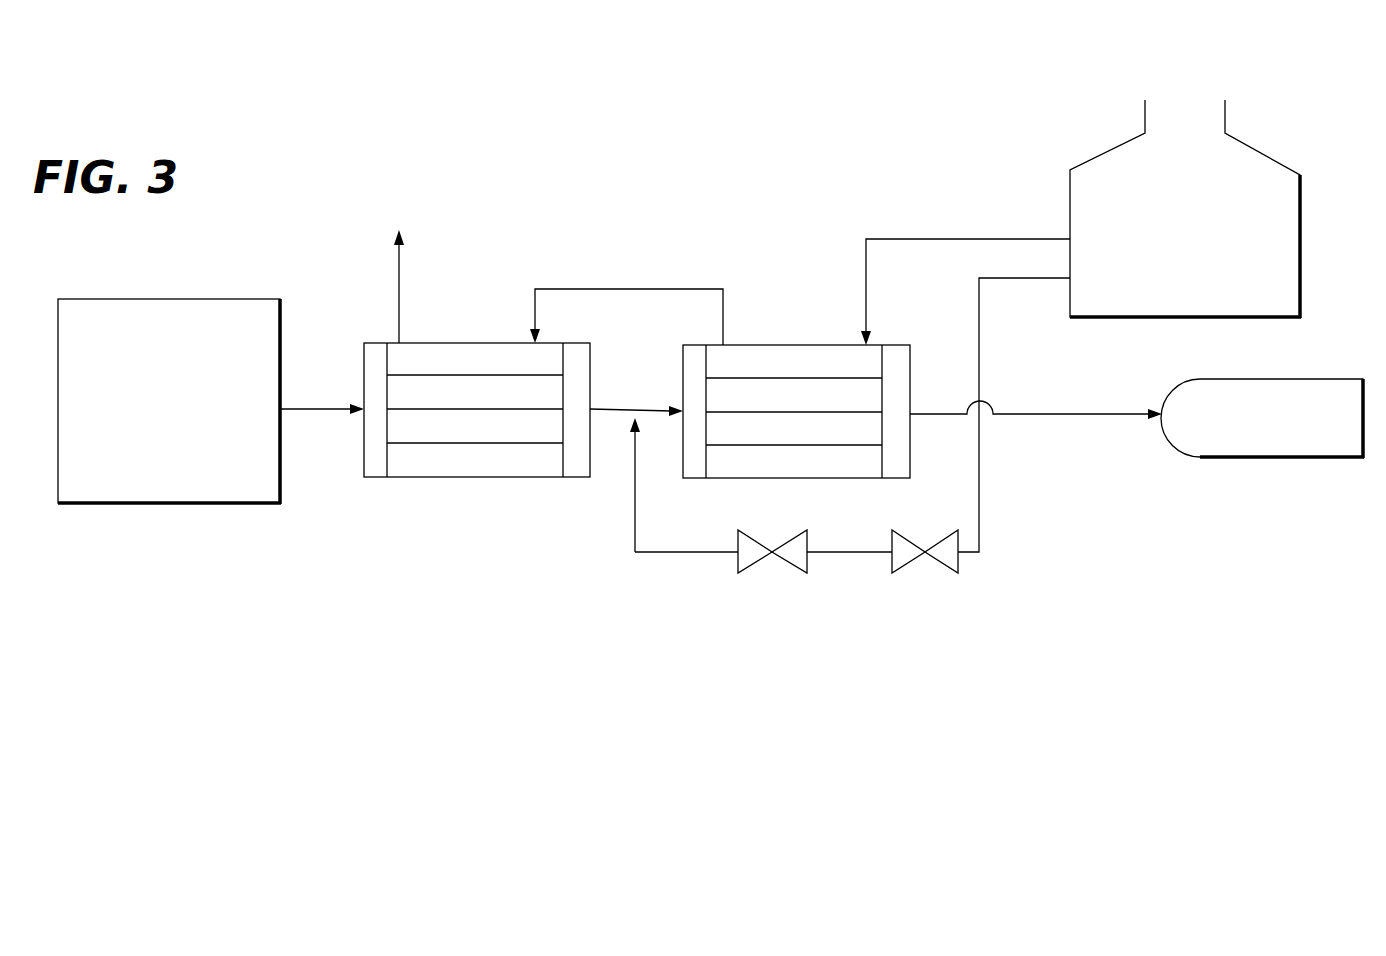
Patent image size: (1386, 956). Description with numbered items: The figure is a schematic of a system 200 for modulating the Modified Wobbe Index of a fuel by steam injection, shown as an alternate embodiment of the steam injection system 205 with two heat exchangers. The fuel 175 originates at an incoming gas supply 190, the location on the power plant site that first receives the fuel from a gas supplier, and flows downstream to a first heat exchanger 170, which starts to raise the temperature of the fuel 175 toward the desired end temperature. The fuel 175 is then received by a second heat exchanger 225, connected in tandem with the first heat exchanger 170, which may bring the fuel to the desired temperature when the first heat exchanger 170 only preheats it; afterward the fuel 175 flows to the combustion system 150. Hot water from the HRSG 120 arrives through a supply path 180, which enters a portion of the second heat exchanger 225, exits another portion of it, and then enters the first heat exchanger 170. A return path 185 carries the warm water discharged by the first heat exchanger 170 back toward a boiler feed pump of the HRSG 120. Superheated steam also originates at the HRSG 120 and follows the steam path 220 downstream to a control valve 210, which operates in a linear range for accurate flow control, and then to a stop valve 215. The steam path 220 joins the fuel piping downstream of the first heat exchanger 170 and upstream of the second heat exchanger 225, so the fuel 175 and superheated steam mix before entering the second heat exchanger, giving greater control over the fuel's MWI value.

The system for modulating the MWI of a fuel 200 is at (372, 96).
The incoming gas supply 190 is at (138, 456).
The fuel 175 is at (292, 409).
The first heat exchanger 170 is at (432, 477).
The return path 185 is at (399, 282).
The supply path 180 is at (636, 289).
The second heat exchanger 225 is at (866, 478).
The steam path 220 is at (980, 478).
The stop valve 215 is at (800, 573).
The control valve 210 is at (953, 573).
The HRSG 120 is at (1196, 243).
The combustion system 150 is at (1258, 457).
The steam injection system 205 is at (1019, 664).